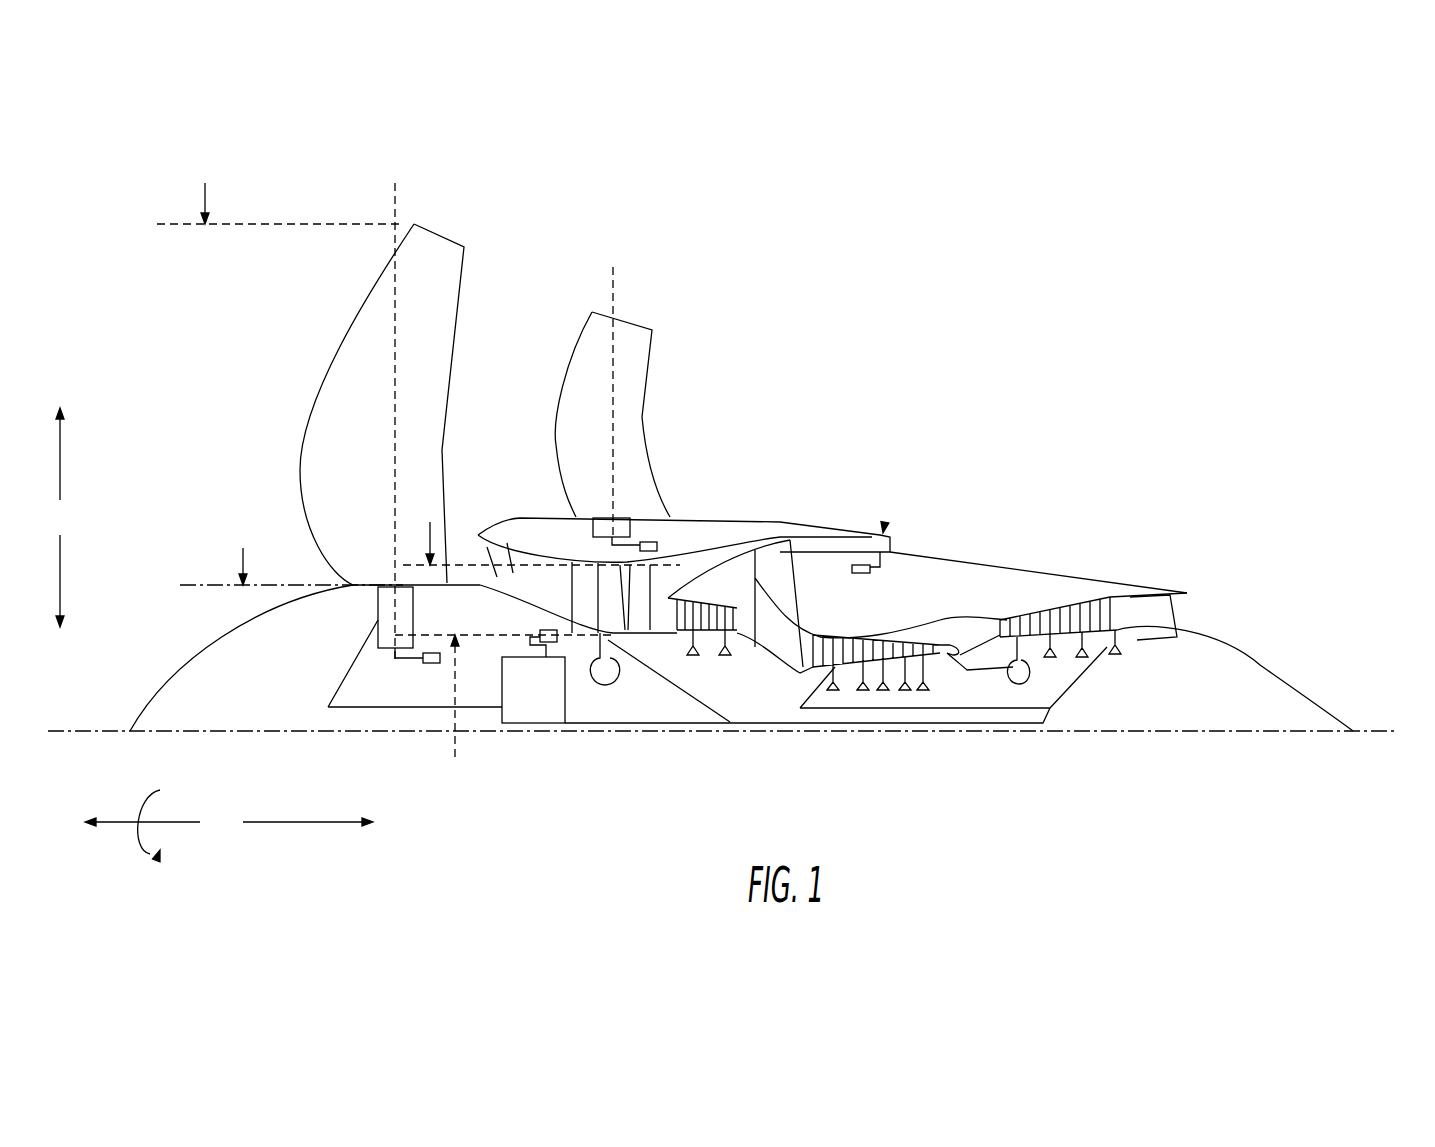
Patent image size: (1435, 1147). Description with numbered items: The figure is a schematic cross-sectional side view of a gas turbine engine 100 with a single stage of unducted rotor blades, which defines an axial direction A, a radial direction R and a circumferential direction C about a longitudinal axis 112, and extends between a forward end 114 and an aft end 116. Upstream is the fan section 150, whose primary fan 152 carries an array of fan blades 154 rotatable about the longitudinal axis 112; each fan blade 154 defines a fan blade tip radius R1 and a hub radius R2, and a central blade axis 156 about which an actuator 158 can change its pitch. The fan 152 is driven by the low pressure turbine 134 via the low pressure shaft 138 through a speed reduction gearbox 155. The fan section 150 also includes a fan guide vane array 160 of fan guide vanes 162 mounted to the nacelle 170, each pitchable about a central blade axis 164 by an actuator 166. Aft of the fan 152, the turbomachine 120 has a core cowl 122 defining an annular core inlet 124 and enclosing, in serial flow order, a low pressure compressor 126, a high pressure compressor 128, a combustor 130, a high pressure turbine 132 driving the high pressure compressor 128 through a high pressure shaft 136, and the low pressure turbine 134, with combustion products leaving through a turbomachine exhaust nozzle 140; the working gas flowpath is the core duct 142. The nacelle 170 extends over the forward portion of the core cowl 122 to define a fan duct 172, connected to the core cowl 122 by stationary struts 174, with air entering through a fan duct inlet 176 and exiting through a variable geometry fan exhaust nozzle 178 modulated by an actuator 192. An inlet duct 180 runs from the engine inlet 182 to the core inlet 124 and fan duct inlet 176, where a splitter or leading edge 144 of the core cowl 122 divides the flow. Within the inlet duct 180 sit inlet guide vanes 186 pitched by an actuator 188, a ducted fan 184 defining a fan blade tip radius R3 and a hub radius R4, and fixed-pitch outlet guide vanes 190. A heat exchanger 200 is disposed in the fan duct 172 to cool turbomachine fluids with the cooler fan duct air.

The gas turbine engine 100 is at (733, 507).
The longitudinal axis 112 is at (1388, 734).
The forward end 114 is at (130, 730).
The aft end 116 is at (1360, 722).
The turbomachine 120 is at (911, 622).
The core cowl 122 is at (893, 550).
The core inlet 124 is at (662, 626).
The low pressure compressor 126 is at (712, 658).
The high pressure compressor 128 is at (893, 690).
The combustor 130 is at (961, 668).
The high pressure turbine 132 is at (1028, 602).
The low pressure turbine 134 is at (1095, 583).
The high pressure shaft 136 is at (1030, 709).
The low pressure shaft 138 is at (342, 677).
The turbomachine exhaust nozzle 140 is at (1157, 613).
The core duct 142 is at (980, 618).
The leading edge 144 is at (682, 632).
The fan section 150 is at (288, 409).
The fan 152 is at (240, 452).
The fan blade 154 is at (335, 353).
The speed reduction gearbox 155 is at (535, 707).
The central blade axis 156 is at (398, 197).
The actuator 158 is at (430, 665).
The fan guide vane array 160 is at (625, 353).
The fan guide vane 162 is at (634, 407).
The central blade axis 164 is at (614, 302).
The actuator 166 is at (658, 541).
The nacelle 170 is at (697, 527).
The fan duct 172 is at (743, 545).
The stationary strut 174 is at (773, 570).
The fan duct inlet 176 is at (664, 583).
The fan exhaust nozzle 178 is at (881, 525).
The inlet duct 180 is at (582, 622).
The engine inlet 182 is at (473, 555).
The ducted fan 184 is at (605, 587).
The inlet guide vane 186 is at (548, 580).
The actuator 188 is at (538, 630).
The outlet guide vane 190 is at (641, 572).
The actuator 192 is at (860, 575).
The heat exchanger 200 is at (704, 562).
The radial direction R is at (60, 517).
The fan blade tip radius R1 is at (203, 193).
The hub radius R2 is at (242, 552).
The fan blade tip radius R3 is at (430, 528).
The hub radius R4 is at (458, 762).
The axial direction A is at (229, 822).
The circumferential direction C is at (159, 819).